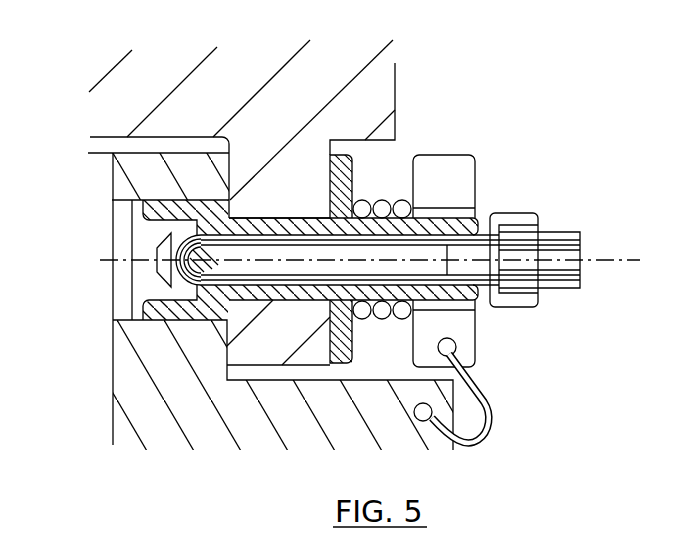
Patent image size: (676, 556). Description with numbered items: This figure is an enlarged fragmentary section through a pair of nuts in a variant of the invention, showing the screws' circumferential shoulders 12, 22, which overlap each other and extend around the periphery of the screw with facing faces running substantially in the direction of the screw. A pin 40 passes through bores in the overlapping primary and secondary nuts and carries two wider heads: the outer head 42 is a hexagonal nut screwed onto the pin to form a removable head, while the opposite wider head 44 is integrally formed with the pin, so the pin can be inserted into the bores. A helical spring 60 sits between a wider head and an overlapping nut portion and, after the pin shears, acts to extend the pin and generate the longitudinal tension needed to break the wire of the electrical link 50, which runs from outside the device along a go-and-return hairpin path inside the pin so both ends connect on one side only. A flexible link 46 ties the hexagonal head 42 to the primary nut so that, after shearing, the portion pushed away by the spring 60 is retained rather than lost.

The circumferential shoulder 12 is at (138, 168).
The circumferential shoulder 22 is at (332, 82).
The pin 40 is at (440, 224).
The outer head 42 is at (458, 168).
The wider head 44 is at (173, 311).
The flexible link 46 is at (493, 408).
The electrical link 50 is at (214, 277).
The helical spring 60 is at (400, 200).